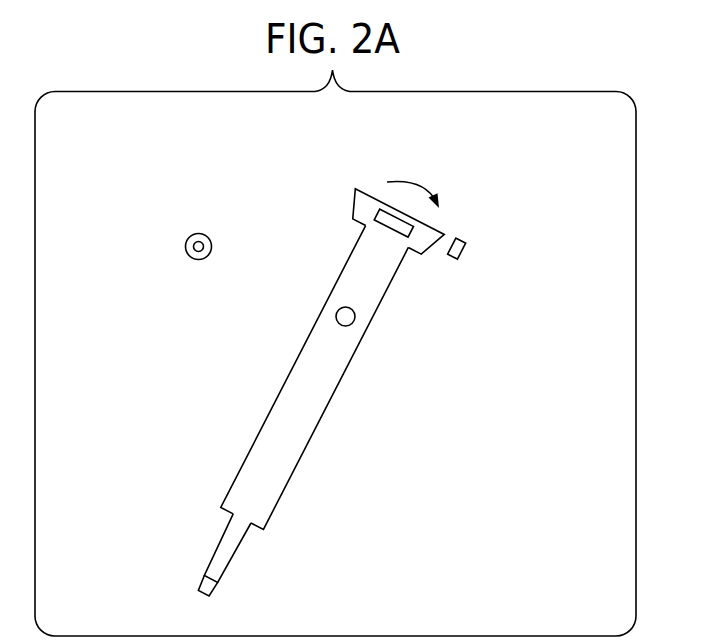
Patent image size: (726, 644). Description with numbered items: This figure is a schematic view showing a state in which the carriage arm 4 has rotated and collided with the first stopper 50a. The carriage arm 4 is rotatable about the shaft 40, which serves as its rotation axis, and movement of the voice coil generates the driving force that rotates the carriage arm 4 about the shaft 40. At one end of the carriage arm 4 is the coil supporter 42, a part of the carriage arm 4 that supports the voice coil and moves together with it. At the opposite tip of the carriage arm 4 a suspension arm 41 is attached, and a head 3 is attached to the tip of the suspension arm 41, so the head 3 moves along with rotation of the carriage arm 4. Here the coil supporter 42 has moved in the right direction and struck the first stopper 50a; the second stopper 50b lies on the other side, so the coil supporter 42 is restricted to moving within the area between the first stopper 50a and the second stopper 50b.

The head 3 is at (212, 590).
The carriage arm 4 is at (340, 414).
The shaft 40 is at (355, 319).
The suspension arm 41 is at (221, 558).
The coil supporter 42 is at (368, 200).
The first stopper 50a is at (463, 239).
The second stopper 50b is at (193, 236).